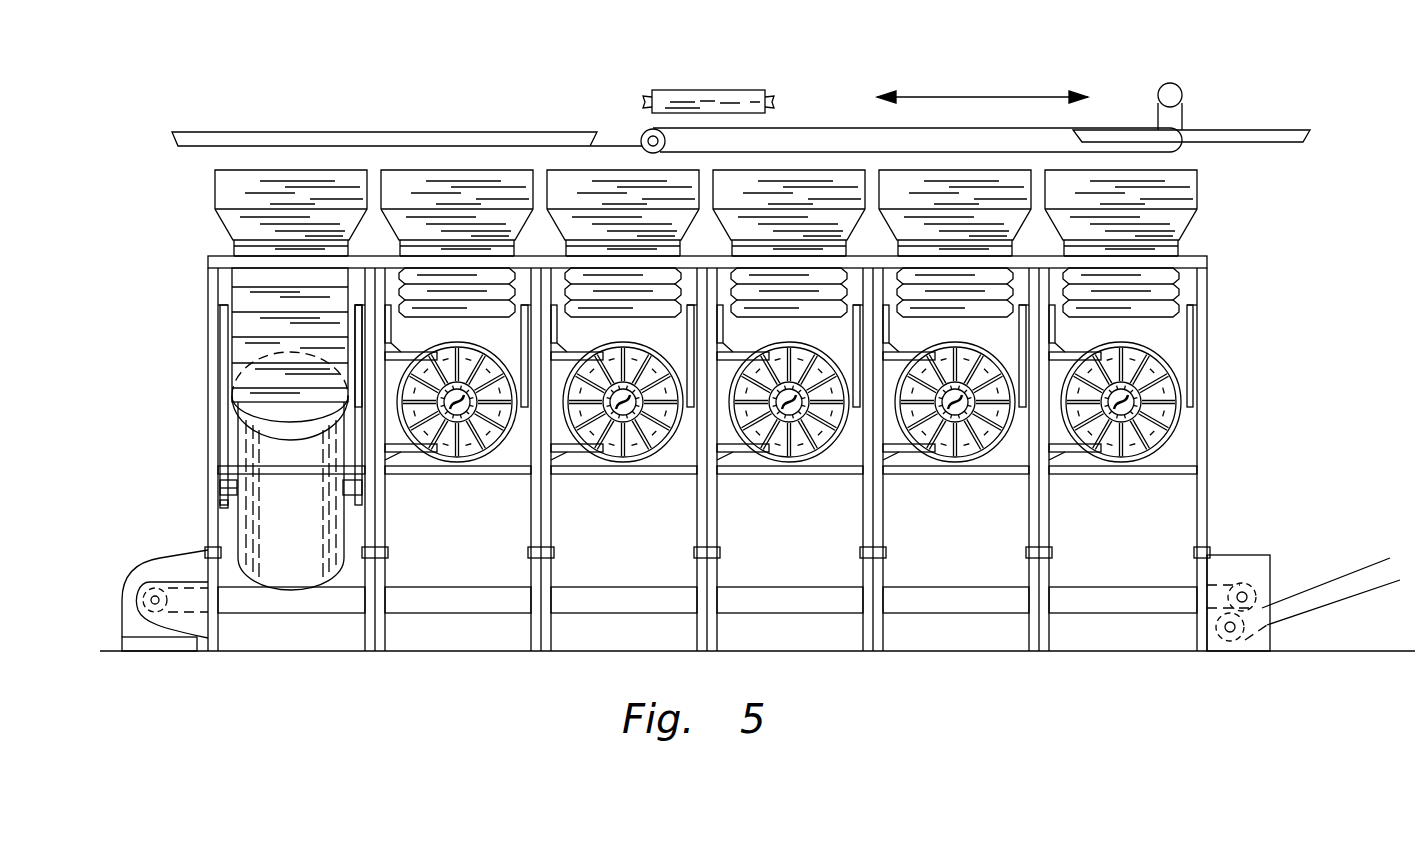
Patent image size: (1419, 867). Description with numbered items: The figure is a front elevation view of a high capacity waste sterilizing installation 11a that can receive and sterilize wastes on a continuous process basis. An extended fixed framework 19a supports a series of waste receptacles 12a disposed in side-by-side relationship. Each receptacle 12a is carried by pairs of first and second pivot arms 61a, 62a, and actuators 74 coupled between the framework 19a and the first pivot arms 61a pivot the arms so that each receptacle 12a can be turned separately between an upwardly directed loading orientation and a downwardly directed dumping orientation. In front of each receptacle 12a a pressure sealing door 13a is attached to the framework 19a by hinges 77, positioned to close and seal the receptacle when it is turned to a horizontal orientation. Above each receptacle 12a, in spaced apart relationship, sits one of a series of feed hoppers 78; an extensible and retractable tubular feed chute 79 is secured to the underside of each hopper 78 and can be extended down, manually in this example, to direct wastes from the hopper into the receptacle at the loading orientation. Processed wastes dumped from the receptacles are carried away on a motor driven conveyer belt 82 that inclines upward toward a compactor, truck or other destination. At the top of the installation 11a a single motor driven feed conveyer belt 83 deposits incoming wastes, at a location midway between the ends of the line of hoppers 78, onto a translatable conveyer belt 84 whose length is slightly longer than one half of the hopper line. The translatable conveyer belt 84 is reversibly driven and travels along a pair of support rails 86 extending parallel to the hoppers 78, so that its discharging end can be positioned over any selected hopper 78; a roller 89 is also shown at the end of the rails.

The high capacity installation 11a is at (1266, 329).
The waste receptacle 12a is at (316, 540).
The pressure sealing door 13a is at (455, 447).
The fixed framework 19a is at (1208, 512).
The first pivot arm 61a is at (208, 444).
The second pivot arm 62a is at (230, 346).
The actuator 74 is at (237, 496).
The hinge 77 is at (390, 458).
The feed hopper 78 is at (1197, 183).
The tubular feed chute 79 is at (1205, 288).
The conveyer belt 82 is at (1354, 575).
The feed conveyer belt 83 is at (681, 88).
The translatable conveyer belt 84 is at (844, 127).
The support rail 86 is at (1276, 130).
The guide roller 89 is at (1183, 87).